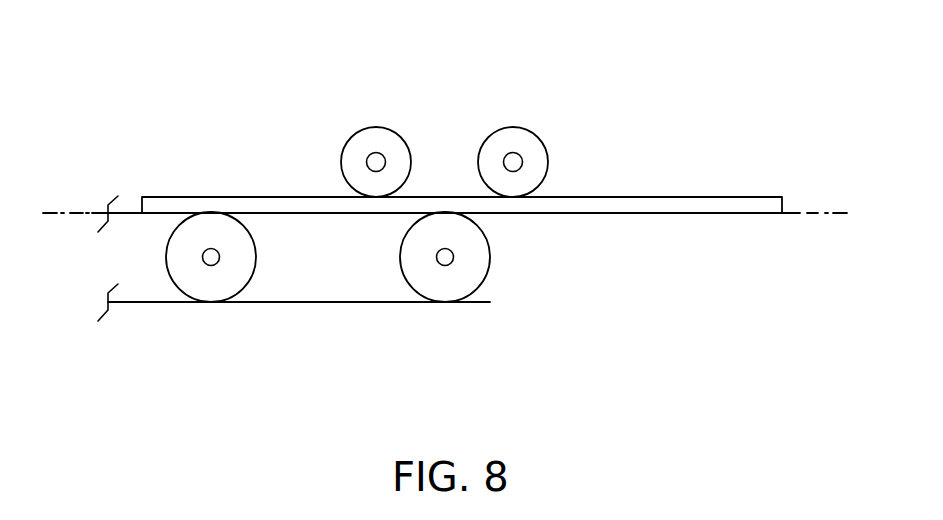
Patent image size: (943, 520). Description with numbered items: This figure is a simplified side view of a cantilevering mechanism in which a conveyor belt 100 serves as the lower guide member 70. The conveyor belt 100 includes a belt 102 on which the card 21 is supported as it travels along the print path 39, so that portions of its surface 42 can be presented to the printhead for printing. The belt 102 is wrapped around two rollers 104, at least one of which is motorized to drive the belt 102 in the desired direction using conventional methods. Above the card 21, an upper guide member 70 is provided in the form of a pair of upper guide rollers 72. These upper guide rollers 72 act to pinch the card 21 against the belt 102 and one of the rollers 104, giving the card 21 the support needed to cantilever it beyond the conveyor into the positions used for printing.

The card 21 is at (705, 205).
The print path 39 is at (827, 222).
The surface 42 is at (614, 197).
The guide member 70 is at (412, 237).
The upper guide rollers 72 is at (392, 128).
The conveyor belt 100 is at (412, 326).
The belt 102 is at (308, 303).
The rollers 104 is at (174, 263).